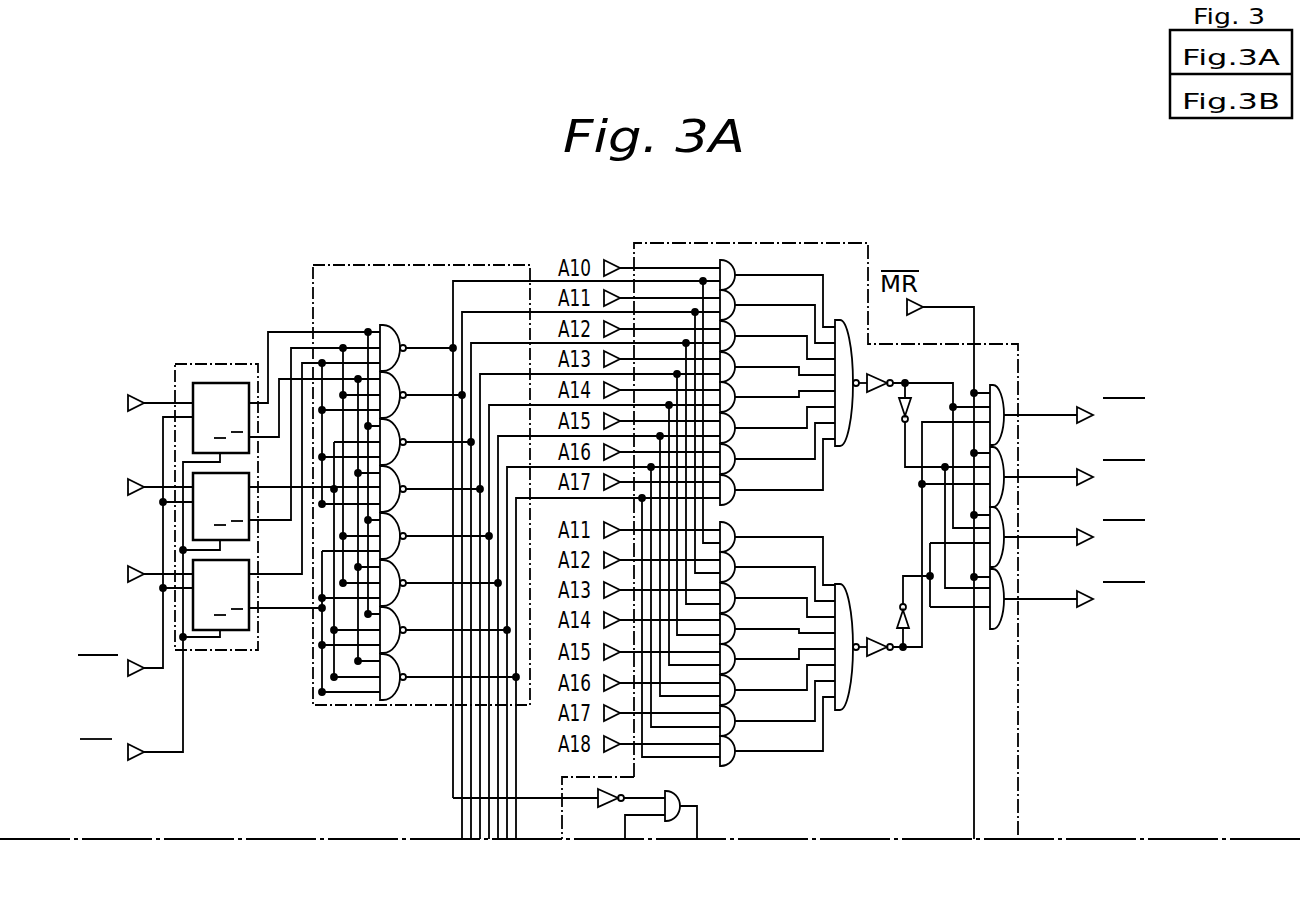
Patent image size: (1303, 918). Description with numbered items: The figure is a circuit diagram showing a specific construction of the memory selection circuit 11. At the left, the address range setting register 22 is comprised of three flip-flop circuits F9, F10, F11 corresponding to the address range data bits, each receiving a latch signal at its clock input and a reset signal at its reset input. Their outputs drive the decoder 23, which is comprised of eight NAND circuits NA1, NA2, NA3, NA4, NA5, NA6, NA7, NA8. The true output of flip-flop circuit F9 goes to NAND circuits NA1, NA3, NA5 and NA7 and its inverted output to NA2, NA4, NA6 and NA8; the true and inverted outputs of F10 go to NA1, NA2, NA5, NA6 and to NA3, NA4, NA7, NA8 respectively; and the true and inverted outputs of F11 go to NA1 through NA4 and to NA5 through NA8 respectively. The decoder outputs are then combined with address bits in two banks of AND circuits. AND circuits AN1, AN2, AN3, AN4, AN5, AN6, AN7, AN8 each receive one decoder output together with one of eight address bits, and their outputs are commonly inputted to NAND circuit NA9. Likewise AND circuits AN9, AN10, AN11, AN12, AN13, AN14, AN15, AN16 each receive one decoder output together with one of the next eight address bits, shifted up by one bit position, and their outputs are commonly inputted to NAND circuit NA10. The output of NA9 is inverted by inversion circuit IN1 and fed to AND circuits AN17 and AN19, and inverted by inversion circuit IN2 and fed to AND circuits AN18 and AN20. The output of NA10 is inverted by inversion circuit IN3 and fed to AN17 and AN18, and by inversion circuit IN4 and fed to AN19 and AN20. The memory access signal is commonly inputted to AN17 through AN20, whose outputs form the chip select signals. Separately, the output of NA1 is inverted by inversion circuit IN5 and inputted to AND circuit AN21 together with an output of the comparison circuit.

The memory selection circuit 11 is at (188, 287).
The address range setting register 22 is at (232, 364).
The decoder 23 is at (393, 265).
The flip-flop circuit F9 is at (193, 383).
The flip-flop circuit F10 is at (193, 505).
The flip-flop circuit F11 is at (193, 598).
The NAND circuit NA1 is at (394, 337).
The NAND circuit NA2 is at (394, 384).
The NAND circuit NA3 is at (394, 431).
The NAND circuit NA4 is at (394, 478).
The NAND circuit NA5 is at (394, 525).
The NAND circuit NA6 is at (394, 572).
The NAND circuit NA7 is at (394, 619).
The NAND circuit NA8 is at (394, 666).
The NAND circuit NA9 is at (850, 446).
The NAND circuit NA10 is at (858, 706).
The AND circuit AN1 is at (734, 277).
The AND circuit AN2 is at (734, 307).
The AND circuit AN3 is at (734, 338).
The AND circuit AN4 is at (734, 369).
The AND circuit AN5 is at (734, 399).
The AND circuit AN6 is at (734, 430).
The AND circuit AN7 is at (734, 461).
The AND circuit AN8 is at (734, 492).
The AND circuit AN9 is at (734, 539).
The AND circuit AN10 is at (734, 569).
The AND circuit AN11 is at (734, 600).
The AND circuit AN12 is at (734, 631).
The AND circuit AN13 is at (734, 661).
The AND circuit AN14 is at (734, 692).
The AND circuit AN15 is at (734, 723).
The AND circuit AN16 is at (734, 753).
The AND circuit AN17 is at (1004, 392).
The AND circuit AN18 is at (1004, 461).
The AND circuit AN19 is at (1004, 524).
The AND circuit AN20 is at (1004, 587).
The AND circuit AN21 is at (684, 797).
The inversion circuit IN1 is at (875, 376).
The inversion circuit IN2 is at (893, 412).
The inversion circuit IN3 is at (876, 655).
The inversion circuit IN4 is at (896, 612).
The inversion circuit IN5 is at (614, 807).